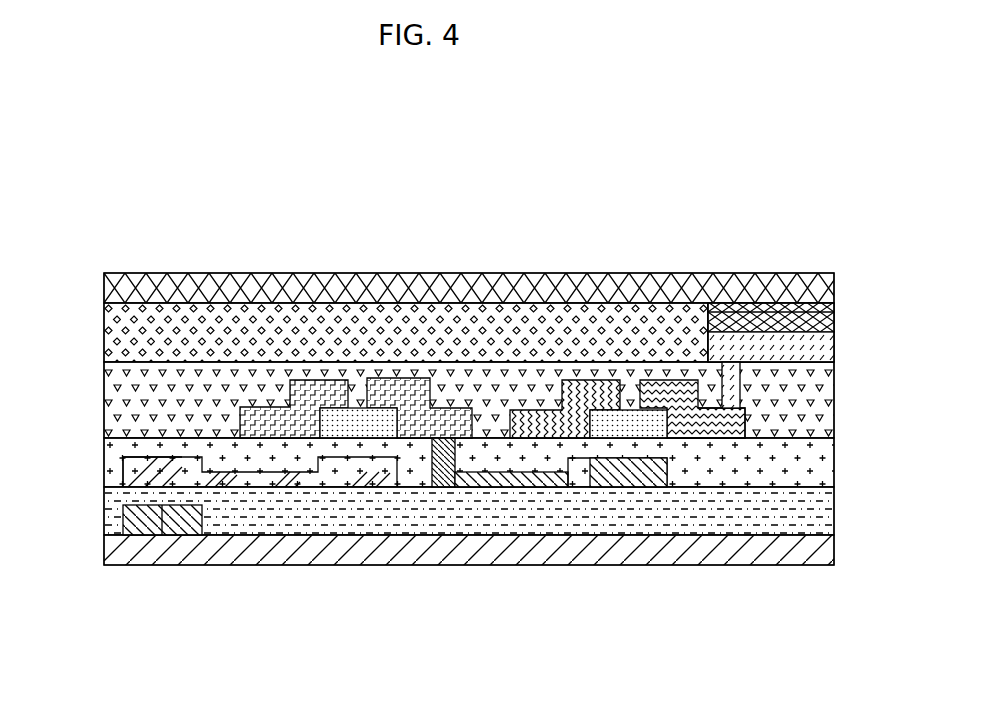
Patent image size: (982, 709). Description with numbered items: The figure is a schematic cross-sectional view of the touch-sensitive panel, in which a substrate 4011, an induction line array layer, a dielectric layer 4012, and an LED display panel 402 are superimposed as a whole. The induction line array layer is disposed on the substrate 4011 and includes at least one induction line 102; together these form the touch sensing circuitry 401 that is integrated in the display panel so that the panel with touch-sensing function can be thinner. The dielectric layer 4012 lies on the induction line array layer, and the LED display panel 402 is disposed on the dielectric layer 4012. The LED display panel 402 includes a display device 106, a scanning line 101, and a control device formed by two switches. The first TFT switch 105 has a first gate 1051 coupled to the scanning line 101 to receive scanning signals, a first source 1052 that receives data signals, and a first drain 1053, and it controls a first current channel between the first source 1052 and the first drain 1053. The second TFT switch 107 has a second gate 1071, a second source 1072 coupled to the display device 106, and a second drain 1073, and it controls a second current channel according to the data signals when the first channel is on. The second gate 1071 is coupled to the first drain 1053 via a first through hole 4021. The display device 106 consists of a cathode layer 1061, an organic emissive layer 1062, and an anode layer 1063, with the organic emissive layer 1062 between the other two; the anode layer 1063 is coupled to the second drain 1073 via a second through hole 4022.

The scanning line 101 is at (135, 483).
The induction line 102 is at (185, 537).
The first TFT switch 105 is at (355, 382).
The first gate 1051 is at (357, 440).
The first source 1052 is at (293, 438).
The first drain 1053 is at (423, 438).
The display device 106 is at (845, 162).
The cathode layer 1061 is at (720, 275).
The organic emissive layer 1062 is at (770, 275).
The anode layer 1063 is at (813, 275).
The second TFT switch 107 is at (625, 373).
The second gate 1071 is at (639, 475).
The second source 1072 is at (568, 438).
The second drain 1073 is at (697, 438).
The touch sensing circuitry 401 is at (96, 460).
The substrate 4011 is at (250, 565).
The dielectric layer 4012 is at (162, 505).
The LED display panel 402 is at (838, 567).
The first through hole 4021 is at (455, 455).
The second through hole 4022 is at (767, 438).